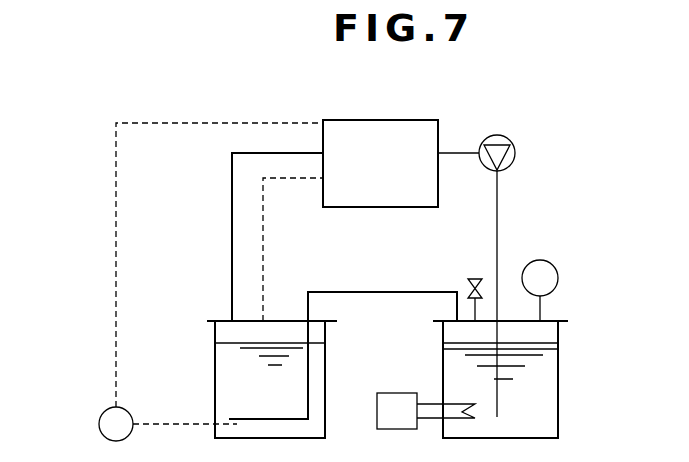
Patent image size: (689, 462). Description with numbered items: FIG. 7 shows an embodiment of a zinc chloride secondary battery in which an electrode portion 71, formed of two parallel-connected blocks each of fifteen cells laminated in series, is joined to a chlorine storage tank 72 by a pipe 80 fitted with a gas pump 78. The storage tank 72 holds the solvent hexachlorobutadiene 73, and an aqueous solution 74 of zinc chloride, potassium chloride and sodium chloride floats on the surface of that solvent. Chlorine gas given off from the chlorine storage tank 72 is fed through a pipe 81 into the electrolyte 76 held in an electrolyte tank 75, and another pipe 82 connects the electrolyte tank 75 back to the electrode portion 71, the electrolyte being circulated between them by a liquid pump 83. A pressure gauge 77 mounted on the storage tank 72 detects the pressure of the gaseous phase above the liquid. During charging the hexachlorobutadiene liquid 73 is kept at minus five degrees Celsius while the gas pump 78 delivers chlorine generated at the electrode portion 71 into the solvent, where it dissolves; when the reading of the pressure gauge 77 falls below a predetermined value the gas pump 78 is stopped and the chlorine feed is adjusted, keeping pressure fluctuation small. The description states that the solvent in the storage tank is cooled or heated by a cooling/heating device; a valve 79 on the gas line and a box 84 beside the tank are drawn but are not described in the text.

The electrode portion 71 is at (398, 120).
The chlorine storage tank 72 is at (558, 416).
The hexachlorobutadiene 73 is at (545, 378).
The aqueous solution 74 is at (558, 345).
The electrolyte tank 75 is at (215, 369).
The electrolyte 76 is at (240, 405).
The pressure gauge 77 is at (563, 248).
The gas pump 78 is at (503, 137).
The valve 79 is at (471, 279).
The pipe 80 is at (500, 205).
The pipe 81 is at (352, 292).
The pipe 82 is at (231, 211).
The liquid pump 83 is at (97, 422).
The heater 84 is at (390, 393).